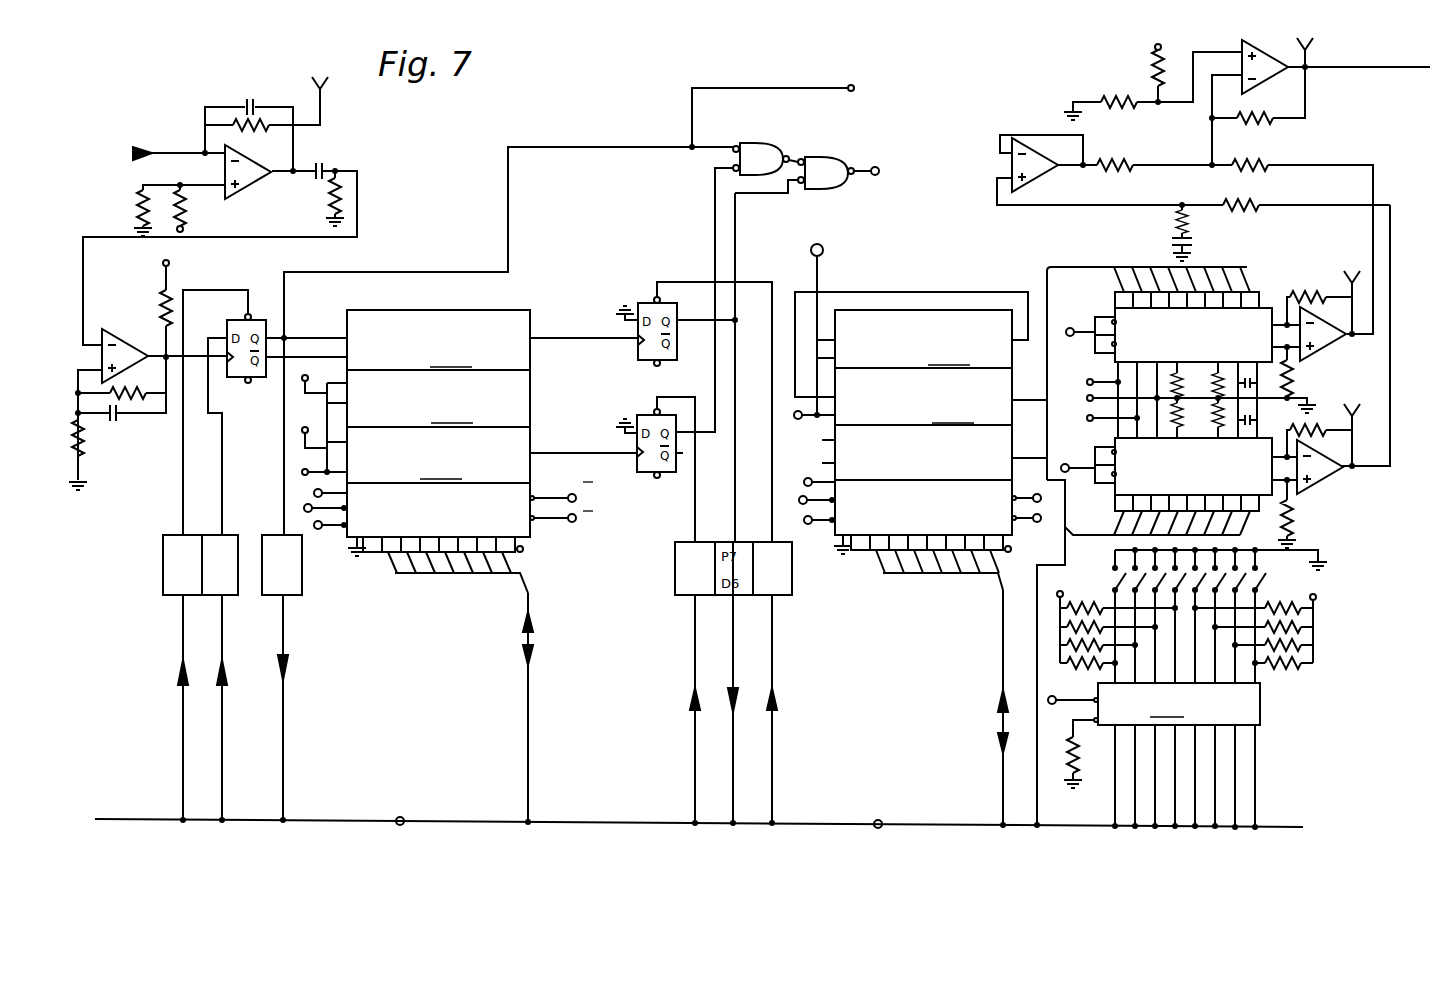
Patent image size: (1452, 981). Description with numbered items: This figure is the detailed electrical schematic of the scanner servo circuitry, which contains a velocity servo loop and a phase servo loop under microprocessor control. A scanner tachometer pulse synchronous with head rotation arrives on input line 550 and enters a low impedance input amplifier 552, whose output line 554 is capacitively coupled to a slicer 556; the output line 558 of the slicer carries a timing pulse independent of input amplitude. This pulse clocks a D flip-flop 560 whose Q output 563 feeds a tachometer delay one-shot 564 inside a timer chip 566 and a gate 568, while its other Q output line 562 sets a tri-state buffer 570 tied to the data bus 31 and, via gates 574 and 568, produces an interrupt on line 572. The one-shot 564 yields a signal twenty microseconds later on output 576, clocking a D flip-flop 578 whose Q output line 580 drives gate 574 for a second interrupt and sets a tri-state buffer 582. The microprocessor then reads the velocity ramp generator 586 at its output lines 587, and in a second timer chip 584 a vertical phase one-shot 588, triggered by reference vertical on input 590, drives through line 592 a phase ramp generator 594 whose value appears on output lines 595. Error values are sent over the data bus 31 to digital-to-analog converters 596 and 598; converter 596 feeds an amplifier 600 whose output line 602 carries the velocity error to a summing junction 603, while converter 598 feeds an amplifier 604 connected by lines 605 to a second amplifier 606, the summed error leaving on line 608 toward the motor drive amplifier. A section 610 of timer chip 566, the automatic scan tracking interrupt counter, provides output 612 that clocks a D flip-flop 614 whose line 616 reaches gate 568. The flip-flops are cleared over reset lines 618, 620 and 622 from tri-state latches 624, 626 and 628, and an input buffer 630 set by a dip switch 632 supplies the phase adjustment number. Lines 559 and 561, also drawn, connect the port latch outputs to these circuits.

The input line 550 is at (163, 154).
The low impedance input amplifier 552 is at (248, 185).
The output line 554 is at (323, 165).
The slicer 556 is at (136, 308).
The output line of the slicer 558 is at (150, 333).
The port line P5 D2 559 is at (243, 598).
The D flip-flop 560 is at (236, 384).
The flip-flop data line 561 is at (222, 472).
The Q output line 562 is at (295, 310).
The Q output 563 is at (300, 340).
The tachometer delay one-shot 564 is at (435, 346).
The timer chip 566 is at (433, 308).
The gate 568 is at (772, 136).
The tri-state buffer 570 is at (301, 570).
The interrupt line 572 is at (875, 168).
The gate 574 is at (848, 142).
The output 576 is at (592, 300).
The D flip-flop 578 is at (655, 290).
The Q output line 580 is at (739, 339).
The tri-state buffer 582 is at (720, 533).
The timer chip 584 is at (902, 310).
The velocity ramp generator 586 is at (427, 402).
The output lines 587 is at (528, 716).
The vertical phase one-shot 588 is at (920, 344).
The input 590 is at (822, 270).
The output line 592 is at (952, 280).
The phase ramp generator 594 is at (912, 402).
The output lines 595 is at (1003, 677).
The digital-to-analog converter 596 is at (1268, 303).
The digital-to-analog converter 598 is at (1302, 508).
The amplifier 600 is at (1331, 346).
The output line 602 is at (1355, 160).
The summing junction 603 is at (1216, 169).
The amplifier 604 is at (1315, 475).
The lines 605 is at (1393, 450).
The second amplifier 606 is at (1055, 171).
The line 608 is at (1328, 69).
The automatic scan tracking interrupt section 610 is at (424, 457).
The output 612 is at (610, 434).
The D flip-flop 614 is at (638, 477).
The interrupt line 616 is at (712, 434).
The reset line 618 is at (183, 488).
The reset line 620 is at (790, 471).
The reset line 622 is at (690, 531).
The tri-state latch 624 is at (163, 556).
The tri-state latch 626 is at (792, 592).
The tri-state latch 628 is at (675, 595).
The input buffer 630 is at (1262, 705).
The dip switch 632 is at (1335, 628).
The data bus 31 is at (408, 790).